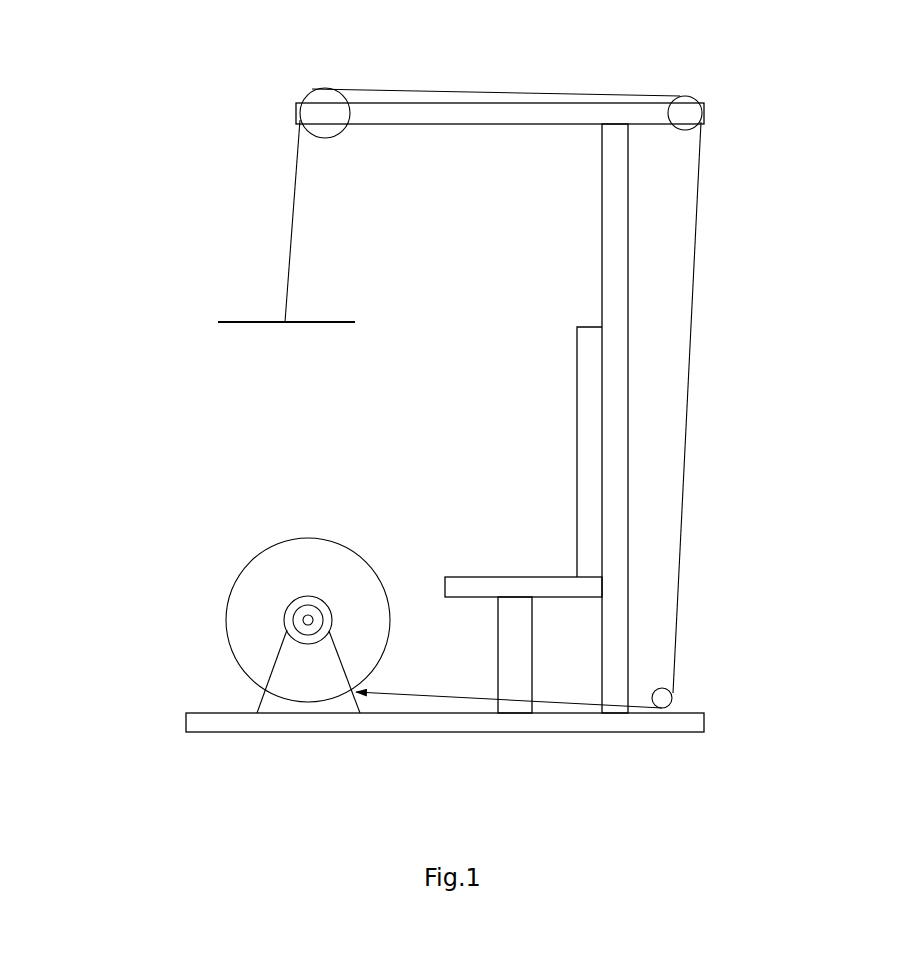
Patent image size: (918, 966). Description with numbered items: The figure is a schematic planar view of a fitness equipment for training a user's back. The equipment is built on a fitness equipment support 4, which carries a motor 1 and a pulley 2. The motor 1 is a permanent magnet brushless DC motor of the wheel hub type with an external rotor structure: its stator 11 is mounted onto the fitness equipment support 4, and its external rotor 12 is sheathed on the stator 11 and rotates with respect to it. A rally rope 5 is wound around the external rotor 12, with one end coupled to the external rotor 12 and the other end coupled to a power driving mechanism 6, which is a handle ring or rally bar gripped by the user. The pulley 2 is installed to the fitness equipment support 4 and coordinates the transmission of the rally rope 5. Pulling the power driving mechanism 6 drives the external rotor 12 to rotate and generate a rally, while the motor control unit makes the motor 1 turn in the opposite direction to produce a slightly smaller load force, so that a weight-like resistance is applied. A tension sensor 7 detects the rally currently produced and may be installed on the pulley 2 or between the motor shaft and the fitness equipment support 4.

The motor 1 is at (226, 622).
The pulley 2 is at (305, 93).
The fitness equipment support 4 is at (615, 545).
The rally rope 5 is at (288, 215).
The power driving mechanism 6 is at (262, 323).
The tension sensor 7 is at (313, 635).
The stator 11 is at (338, 615).
The external rotor 12 is at (285, 577).